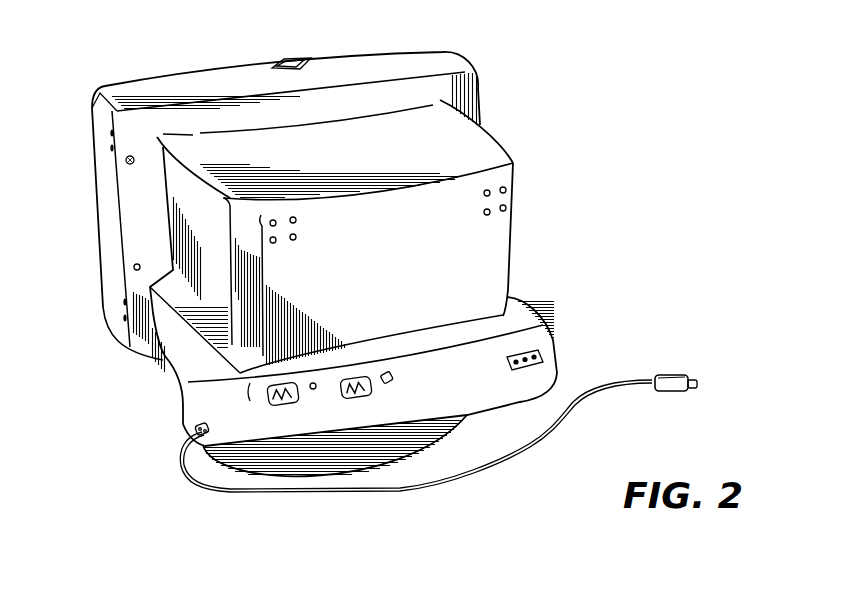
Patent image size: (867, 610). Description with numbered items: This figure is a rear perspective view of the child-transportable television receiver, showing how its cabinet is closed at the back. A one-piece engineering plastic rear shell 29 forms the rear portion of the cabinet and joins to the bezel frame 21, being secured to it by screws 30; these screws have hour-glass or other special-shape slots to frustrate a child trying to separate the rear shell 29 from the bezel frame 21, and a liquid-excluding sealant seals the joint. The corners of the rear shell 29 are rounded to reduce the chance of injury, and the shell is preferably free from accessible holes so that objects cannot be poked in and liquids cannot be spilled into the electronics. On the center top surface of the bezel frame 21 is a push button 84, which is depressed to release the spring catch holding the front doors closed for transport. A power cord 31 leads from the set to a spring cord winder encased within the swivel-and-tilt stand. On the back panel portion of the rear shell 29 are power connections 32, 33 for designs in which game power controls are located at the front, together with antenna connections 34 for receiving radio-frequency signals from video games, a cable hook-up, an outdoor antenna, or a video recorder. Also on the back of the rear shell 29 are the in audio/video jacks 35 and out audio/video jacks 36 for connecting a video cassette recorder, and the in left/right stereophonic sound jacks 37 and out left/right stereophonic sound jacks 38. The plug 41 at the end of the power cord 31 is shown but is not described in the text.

The bezel frame 21 is at (190, 78).
The push button 84 is at (284, 59).
The rear shell 29 is at (460, 143).
The screws 30 is at (127, 161).
The power cord 31 is at (560, 436).
The power connection 32 is at (292, 403).
The power connection 33 is at (350, 398).
The antenna connections 34 is at (543, 356).
The in audio/video jacks 35 is at (273, 223).
The out audio/video jacks 36 is at (320, 251).
The in left/right stereophonic sound jacks 37 is at (480, 198).
The out left/right stereophonic sound jacks 38 is at (508, 208).
The plug 41 is at (662, 374).